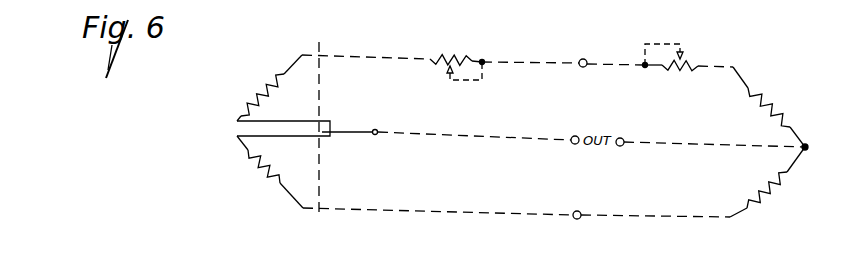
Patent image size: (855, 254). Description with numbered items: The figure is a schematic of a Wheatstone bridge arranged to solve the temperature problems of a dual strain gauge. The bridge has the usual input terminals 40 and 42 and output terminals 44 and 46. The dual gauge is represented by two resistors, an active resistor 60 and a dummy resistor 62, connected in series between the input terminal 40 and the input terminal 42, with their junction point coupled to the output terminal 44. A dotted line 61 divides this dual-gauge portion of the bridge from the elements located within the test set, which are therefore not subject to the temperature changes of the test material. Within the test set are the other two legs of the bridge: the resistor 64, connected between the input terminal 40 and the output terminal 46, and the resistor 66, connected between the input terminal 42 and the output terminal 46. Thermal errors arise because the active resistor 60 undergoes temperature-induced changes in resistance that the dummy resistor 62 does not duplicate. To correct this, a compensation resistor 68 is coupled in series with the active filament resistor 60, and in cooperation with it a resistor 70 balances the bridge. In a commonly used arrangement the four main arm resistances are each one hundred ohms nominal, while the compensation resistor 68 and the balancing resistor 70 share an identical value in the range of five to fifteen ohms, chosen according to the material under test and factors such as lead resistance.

The input terminal 40 is at (580, 67).
The input terminal 42 is at (575, 220).
The output terminal 44 is at (572, 145).
The output terminal 46 is at (618, 147).
The active resistor 60 is at (246, 98).
The dotted line 61 is at (322, 216).
The dummy resistor 62 is at (256, 183).
The resistor 64 is at (765, 100).
The resistor 66 is at (770, 192).
The compensation resistor 68 is at (445, 55).
The balancing resistor 70 is at (690, 60).